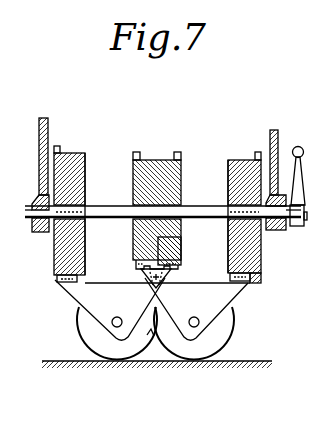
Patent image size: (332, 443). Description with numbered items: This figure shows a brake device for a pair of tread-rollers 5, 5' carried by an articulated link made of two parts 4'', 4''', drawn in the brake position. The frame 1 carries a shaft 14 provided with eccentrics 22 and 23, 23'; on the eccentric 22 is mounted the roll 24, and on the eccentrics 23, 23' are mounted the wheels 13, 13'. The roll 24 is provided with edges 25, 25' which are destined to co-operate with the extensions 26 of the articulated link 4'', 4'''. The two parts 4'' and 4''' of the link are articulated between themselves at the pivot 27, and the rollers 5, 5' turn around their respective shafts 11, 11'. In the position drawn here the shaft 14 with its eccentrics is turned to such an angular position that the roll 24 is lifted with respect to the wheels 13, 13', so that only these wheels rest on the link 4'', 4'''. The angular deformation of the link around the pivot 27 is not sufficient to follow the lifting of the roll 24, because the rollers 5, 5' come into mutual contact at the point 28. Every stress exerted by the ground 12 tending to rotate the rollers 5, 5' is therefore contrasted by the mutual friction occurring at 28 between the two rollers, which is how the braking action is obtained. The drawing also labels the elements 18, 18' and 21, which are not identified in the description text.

The frame 1 is at (41, 118).
The articulated link part 4'' is at (101, 309).
The articulated link part 4''' is at (218, 309).
The roller 5 is at (110, 360).
The roller 5' is at (194, 360).
The roller shaft 11 is at (111, 365).
The roller shaft 11' is at (211, 365).
The ground 12 is at (262, 361).
The wheel 13 is at (95, 184).
The wheel 13' is at (234, 183).
The shaft 14 is at (37, 226).
The hub 18 is at (69, 187).
The hub 18' is at (246, 188).
The lever 21 is at (298, 146).
The eccentric 22 is at (140, 206).
The eccentric 23 is at (47, 260).
The eccentric 23' is at (264, 242).
The roll 24 is at (153, 172).
The edge of roll 25 is at (127, 126).
The edge of roll 25' is at (185, 126).
The extensions of articulated link 26 is at (143, 262).
The pivot 27 is at (181, 239).
The contact point 28 is at (151, 332).